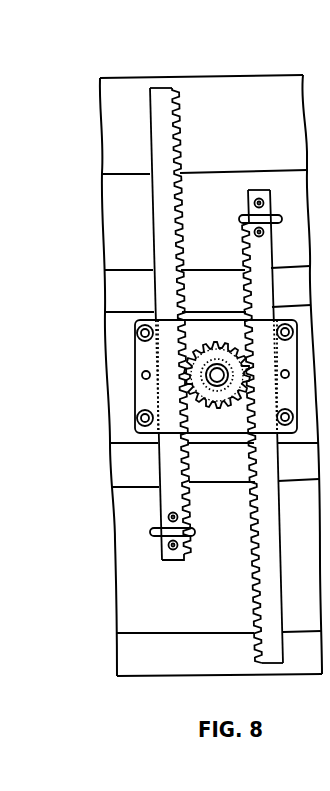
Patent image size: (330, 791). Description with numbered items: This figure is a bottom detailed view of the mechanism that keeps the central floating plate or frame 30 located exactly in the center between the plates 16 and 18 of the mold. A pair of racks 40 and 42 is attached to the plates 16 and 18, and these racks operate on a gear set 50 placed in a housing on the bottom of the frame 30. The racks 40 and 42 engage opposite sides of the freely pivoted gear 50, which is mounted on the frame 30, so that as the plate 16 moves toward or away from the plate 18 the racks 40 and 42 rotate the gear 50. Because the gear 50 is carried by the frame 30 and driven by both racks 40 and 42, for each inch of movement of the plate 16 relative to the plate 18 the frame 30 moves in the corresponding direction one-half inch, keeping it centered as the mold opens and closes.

The plate 16 is at (200, 613).
The plate 18 is at (265, 149).
The central floating plate or frame 30 is at (235, 302).
The rack 40 is at (177, 493).
The rack 42 is at (253, 523).
The gear set 50 is at (205, 372).